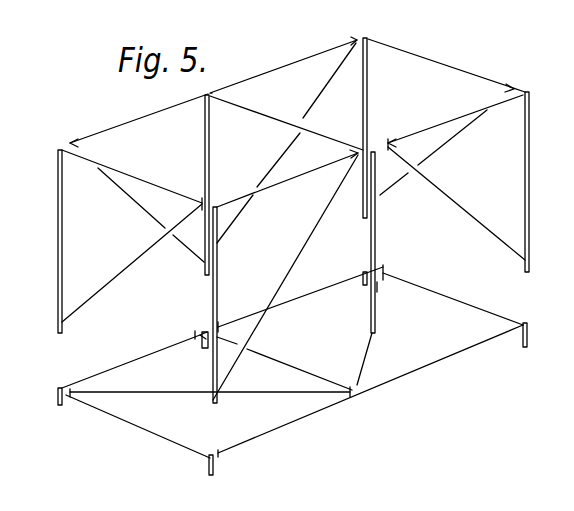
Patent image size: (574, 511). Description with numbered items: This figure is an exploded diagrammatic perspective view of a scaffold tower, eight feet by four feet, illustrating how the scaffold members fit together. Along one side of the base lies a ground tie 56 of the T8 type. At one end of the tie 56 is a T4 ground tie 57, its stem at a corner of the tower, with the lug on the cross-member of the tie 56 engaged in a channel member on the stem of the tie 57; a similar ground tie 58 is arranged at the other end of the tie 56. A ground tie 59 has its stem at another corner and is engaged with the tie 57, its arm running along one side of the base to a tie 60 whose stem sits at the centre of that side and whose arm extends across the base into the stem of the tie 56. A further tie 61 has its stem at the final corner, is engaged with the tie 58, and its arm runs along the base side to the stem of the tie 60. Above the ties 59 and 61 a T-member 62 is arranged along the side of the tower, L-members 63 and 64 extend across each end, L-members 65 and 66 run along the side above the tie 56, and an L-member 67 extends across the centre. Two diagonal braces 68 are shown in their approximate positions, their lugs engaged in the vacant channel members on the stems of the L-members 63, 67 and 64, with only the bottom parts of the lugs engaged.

The ground tie (T8) 56 is at (315, 414).
The ground tie (T4) 57 is at (143, 428).
The ground tie (T4) 58 is at (188, 391).
The ground tie (T4) 59 is at (153, 350).
The tie (T4) 60 is at (291, 364).
The tie 61 is at (320, 286).
The T-member 62 is at (142, 118).
The L-member 63 is at (83, 155).
The L-member 64 is at (463, 72).
The L-member 65 is at (327, 163).
The L-member 66 is at (457, 117).
The L-member 67 is at (323, 131).
The diagonal brace 68 is at (369, 353).